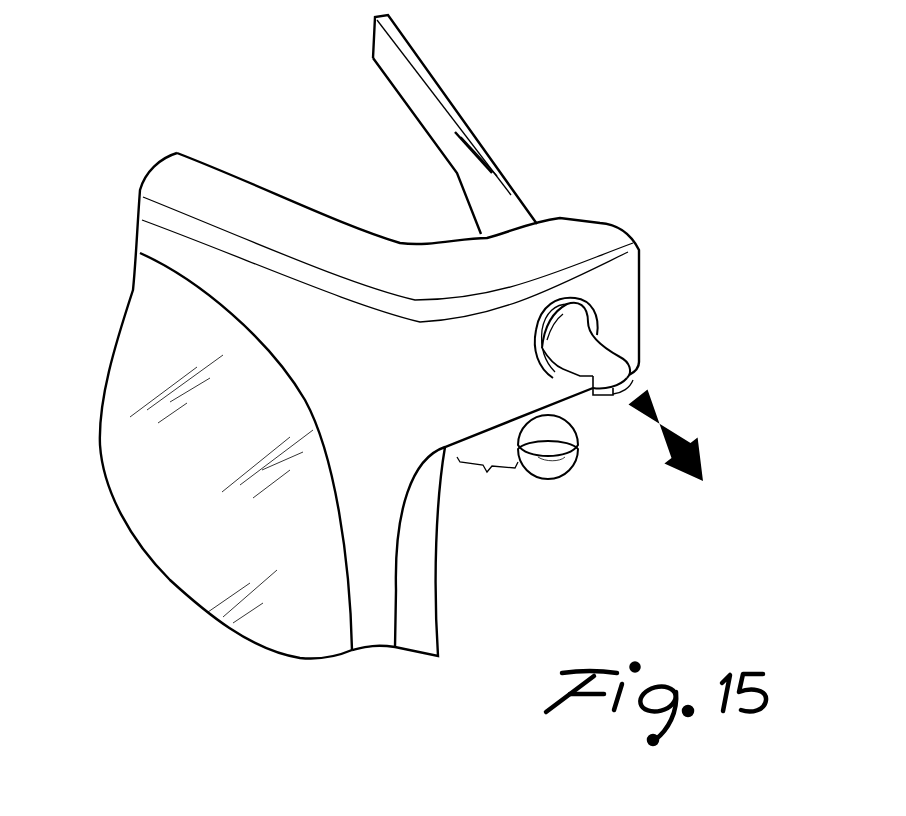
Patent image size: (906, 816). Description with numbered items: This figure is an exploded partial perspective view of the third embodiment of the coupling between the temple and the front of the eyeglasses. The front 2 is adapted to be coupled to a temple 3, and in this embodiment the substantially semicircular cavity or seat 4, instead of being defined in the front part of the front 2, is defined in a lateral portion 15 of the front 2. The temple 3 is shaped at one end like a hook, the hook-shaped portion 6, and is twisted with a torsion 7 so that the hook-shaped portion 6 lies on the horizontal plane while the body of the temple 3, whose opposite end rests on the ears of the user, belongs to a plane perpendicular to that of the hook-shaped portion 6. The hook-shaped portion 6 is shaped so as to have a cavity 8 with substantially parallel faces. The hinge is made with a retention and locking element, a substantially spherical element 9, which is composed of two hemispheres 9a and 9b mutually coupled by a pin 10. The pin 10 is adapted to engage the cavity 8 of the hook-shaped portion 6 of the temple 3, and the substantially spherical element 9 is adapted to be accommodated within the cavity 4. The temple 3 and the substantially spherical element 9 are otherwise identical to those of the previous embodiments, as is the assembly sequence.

The front 2 is at (227, 193).
The temple 3 is at (427, 77).
The torsion 7 is at (503, 213).
The lateral portion 15 is at (627, 277).
The cavity 4 is at (597, 322).
The hook-shaped portion 6 is at (627, 373).
The cavity 8 is at (600, 370).
The hemisphere 9a is at (540, 433).
The hemisphere 9b is at (550, 477).
The pin 10 is at (543, 455).
The substantially spherical element 9 is at (622, 485).